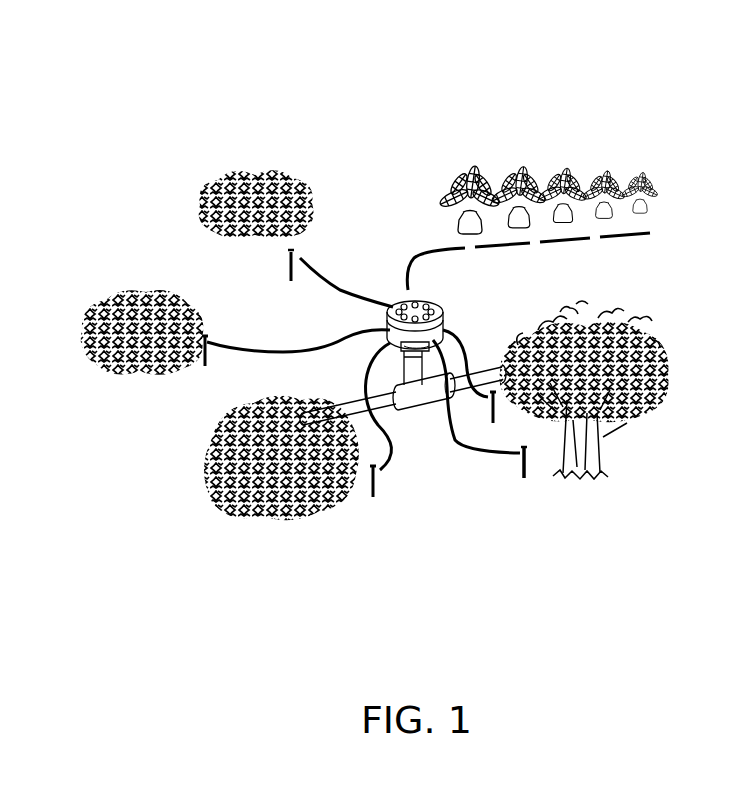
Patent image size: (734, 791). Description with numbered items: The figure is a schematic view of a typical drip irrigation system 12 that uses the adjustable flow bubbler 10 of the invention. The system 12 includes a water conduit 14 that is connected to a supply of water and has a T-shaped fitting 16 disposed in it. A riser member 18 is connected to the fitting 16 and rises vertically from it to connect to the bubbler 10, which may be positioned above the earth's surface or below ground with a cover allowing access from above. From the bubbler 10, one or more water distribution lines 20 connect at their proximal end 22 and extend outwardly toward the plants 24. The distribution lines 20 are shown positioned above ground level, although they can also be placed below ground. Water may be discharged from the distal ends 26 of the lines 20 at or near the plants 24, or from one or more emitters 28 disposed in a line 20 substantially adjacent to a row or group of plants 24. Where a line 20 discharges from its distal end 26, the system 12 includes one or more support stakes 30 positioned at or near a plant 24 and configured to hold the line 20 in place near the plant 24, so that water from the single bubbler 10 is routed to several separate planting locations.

The adjustable flow bubbler 10 is at (449, 305).
The drip irrigation system 12 is at (548, 111).
The water conduit 14 is at (402, 411).
The T-shaped fitting 16 is at (423, 408).
The riser member 18 is at (438, 400).
The water distribution line 20 is at (320, 278).
The proximal end 22 is at (425, 259).
The plants 24 is at (608, 178).
The distal end 26 is at (526, 454).
The emitter 28 is at (613, 237).
The support stake 30 is at (517, 464).